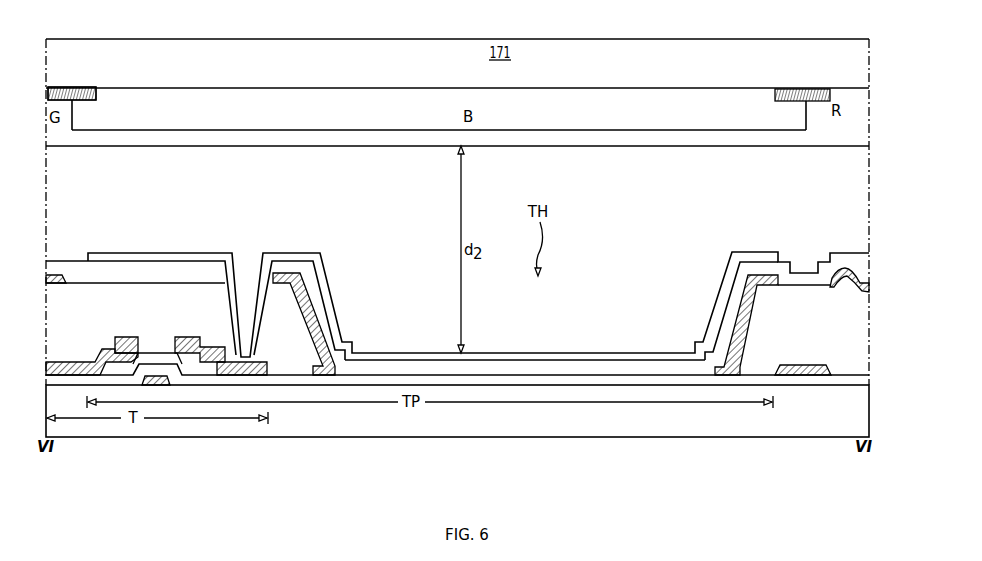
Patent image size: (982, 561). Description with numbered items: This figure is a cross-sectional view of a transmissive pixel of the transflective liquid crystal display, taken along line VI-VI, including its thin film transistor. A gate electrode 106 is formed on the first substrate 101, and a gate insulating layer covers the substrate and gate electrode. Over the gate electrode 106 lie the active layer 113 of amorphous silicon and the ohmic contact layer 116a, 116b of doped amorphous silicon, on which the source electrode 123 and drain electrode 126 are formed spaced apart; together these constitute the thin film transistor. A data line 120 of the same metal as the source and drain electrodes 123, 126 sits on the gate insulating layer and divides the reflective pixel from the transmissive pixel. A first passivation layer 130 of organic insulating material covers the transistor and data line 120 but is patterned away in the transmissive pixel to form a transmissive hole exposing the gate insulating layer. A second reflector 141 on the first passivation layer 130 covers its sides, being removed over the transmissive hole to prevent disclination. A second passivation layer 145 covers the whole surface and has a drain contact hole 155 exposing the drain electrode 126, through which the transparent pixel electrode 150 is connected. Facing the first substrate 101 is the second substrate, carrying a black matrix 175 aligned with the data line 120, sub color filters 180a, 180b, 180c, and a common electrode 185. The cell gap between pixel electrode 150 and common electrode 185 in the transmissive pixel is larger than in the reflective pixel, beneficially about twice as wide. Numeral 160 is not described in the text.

The first substrate 101 is at (447, 430).
The gate electrode 106 is at (160, 386).
The active layer 113 is at (154, 357).
The ohmic contact layer 116a is at (116, 345).
The ohmic contact layer 116b is at (198, 353).
The data line 120 is at (800, 365).
The source electrode 123 is at (93, 350).
The drain electrode 126 is at (262, 362).
The first passivation layer 130 is at (73, 292).
The second reflector 141 is at (308, 302).
The second passivation layer 145 is at (287, 270).
The pixel electrode 150 is at (193, 258).
The drain contact hole 155 is at (246, 253).
The upper substrate 160 is at (858, 190).
The black matrix 175 is at (87, 94).
The R sub color filter 180a is at (838, 99).
The G sub color filter 180b is at (62, 107).
The B sub color filter 180c is at (548, 112).
The common electrode 185 is at (619, 145).